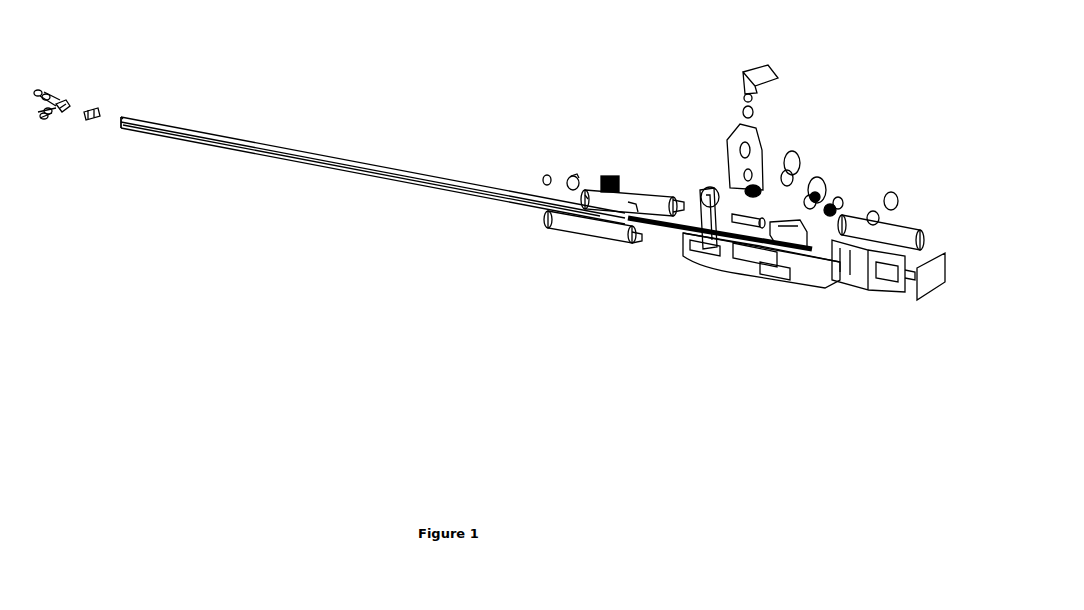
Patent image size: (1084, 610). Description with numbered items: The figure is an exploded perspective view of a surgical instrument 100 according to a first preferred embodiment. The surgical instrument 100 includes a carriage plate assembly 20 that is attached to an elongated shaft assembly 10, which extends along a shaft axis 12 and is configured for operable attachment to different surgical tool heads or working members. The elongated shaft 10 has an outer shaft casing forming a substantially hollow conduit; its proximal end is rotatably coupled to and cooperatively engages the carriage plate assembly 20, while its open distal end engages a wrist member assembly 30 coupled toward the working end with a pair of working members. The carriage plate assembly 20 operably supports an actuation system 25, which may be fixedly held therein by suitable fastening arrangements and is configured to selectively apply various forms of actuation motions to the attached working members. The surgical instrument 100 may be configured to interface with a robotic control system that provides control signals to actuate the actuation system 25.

The surgical instrument 100 is at (458, 207).
The elongated shaft assembly 10 is at (277, 143).
The shaft axis 12 is at (365, 167).
The carriage plate assembly 20 is at (765, 272).
The actuation system 25 is at (637, 190).
The wrist member assembly 30 is at (58, 103).